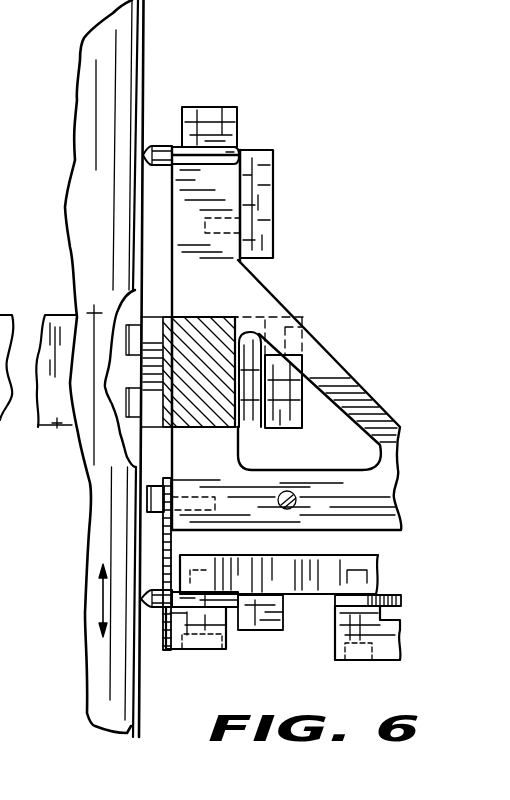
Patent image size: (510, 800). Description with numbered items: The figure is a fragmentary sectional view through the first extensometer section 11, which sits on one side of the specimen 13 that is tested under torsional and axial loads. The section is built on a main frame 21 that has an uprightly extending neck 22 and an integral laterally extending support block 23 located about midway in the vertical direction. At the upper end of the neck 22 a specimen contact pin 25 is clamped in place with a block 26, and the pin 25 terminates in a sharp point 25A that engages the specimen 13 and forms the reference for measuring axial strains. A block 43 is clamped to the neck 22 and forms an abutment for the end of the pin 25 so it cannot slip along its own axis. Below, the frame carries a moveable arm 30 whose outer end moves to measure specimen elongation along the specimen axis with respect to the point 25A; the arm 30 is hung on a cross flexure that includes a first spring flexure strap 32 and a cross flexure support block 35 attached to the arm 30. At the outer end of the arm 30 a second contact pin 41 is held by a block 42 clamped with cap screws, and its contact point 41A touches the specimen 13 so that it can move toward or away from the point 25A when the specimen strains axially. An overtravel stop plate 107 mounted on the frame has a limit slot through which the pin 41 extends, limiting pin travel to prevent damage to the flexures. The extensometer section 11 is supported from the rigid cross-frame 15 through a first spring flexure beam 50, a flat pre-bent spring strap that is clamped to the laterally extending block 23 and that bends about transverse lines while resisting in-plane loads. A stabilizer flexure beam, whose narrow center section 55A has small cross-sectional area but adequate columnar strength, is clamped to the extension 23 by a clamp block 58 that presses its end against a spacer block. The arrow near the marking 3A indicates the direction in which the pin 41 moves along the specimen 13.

The specimen 13 is at (138, 41).
The rigid cross-frame 15 is at (1, 314).
The specimen contact pin 25 is at (163, 146).
The sharp point 25A is at (143, 157).
The block 26 is at (233, 128).
The neck 22 is at (185, 228).
The block 43 is at (265, 210).
The main frame 21 is at (248, 302).
The first extensometer section 11 is at (346, 342).
The first spring flexure beam 50 is at (165, 314).
The laterally extending support block 23 is at (207, 428).
The center section of stabilizer flexure beam 55A is at (265, 369).
The clamp block 58 is at (303, 413).
The overtravel stop plate 107 is at (145, 533).
The contact point 41A is at (141, 590).
The second contact pin 41 is at (150, 608).
The direction of movement 3A is at (53, 607).
The moveable arm 30 is at (317, 567).
The first spring flexure strap 32 is at (390, 596).
The cross flexure support block 35 is at (383, 657).
The block 42 is at (197, 650).